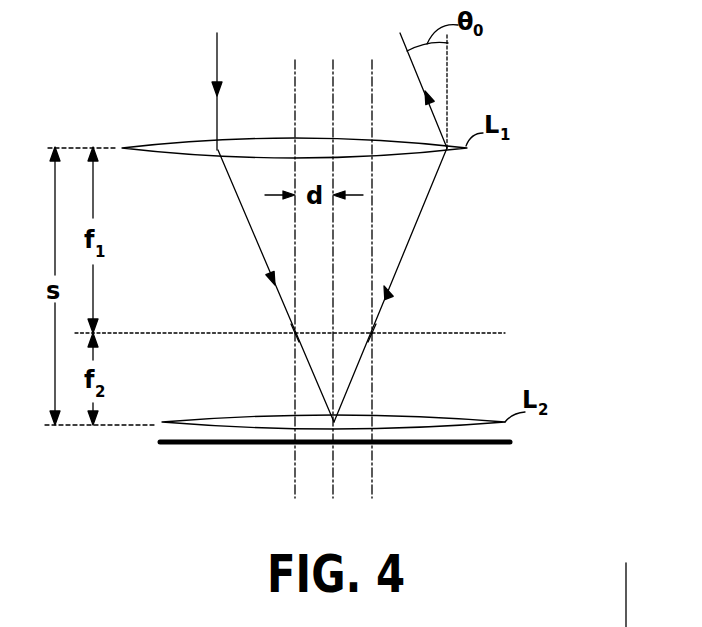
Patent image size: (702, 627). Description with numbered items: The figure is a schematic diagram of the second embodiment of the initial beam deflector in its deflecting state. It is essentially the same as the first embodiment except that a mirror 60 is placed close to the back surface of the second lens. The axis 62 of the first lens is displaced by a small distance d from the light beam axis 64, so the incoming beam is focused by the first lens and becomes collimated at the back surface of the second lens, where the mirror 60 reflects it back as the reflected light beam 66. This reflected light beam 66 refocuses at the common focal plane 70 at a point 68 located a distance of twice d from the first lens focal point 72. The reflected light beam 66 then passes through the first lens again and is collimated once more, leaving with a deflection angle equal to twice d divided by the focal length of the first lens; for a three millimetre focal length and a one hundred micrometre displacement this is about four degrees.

The mirror 60 is at (510, 443).
The axis of lens L1 62 is at (295, 100).
The light beam axis 64 is at (333, 290).
The reflected light beam 66 is at (430, 193).
The point 68 is at (372, 335).
The common focal plane 70 is at (460, 333).
The lens L1 focal point 72 is at (295, 335).